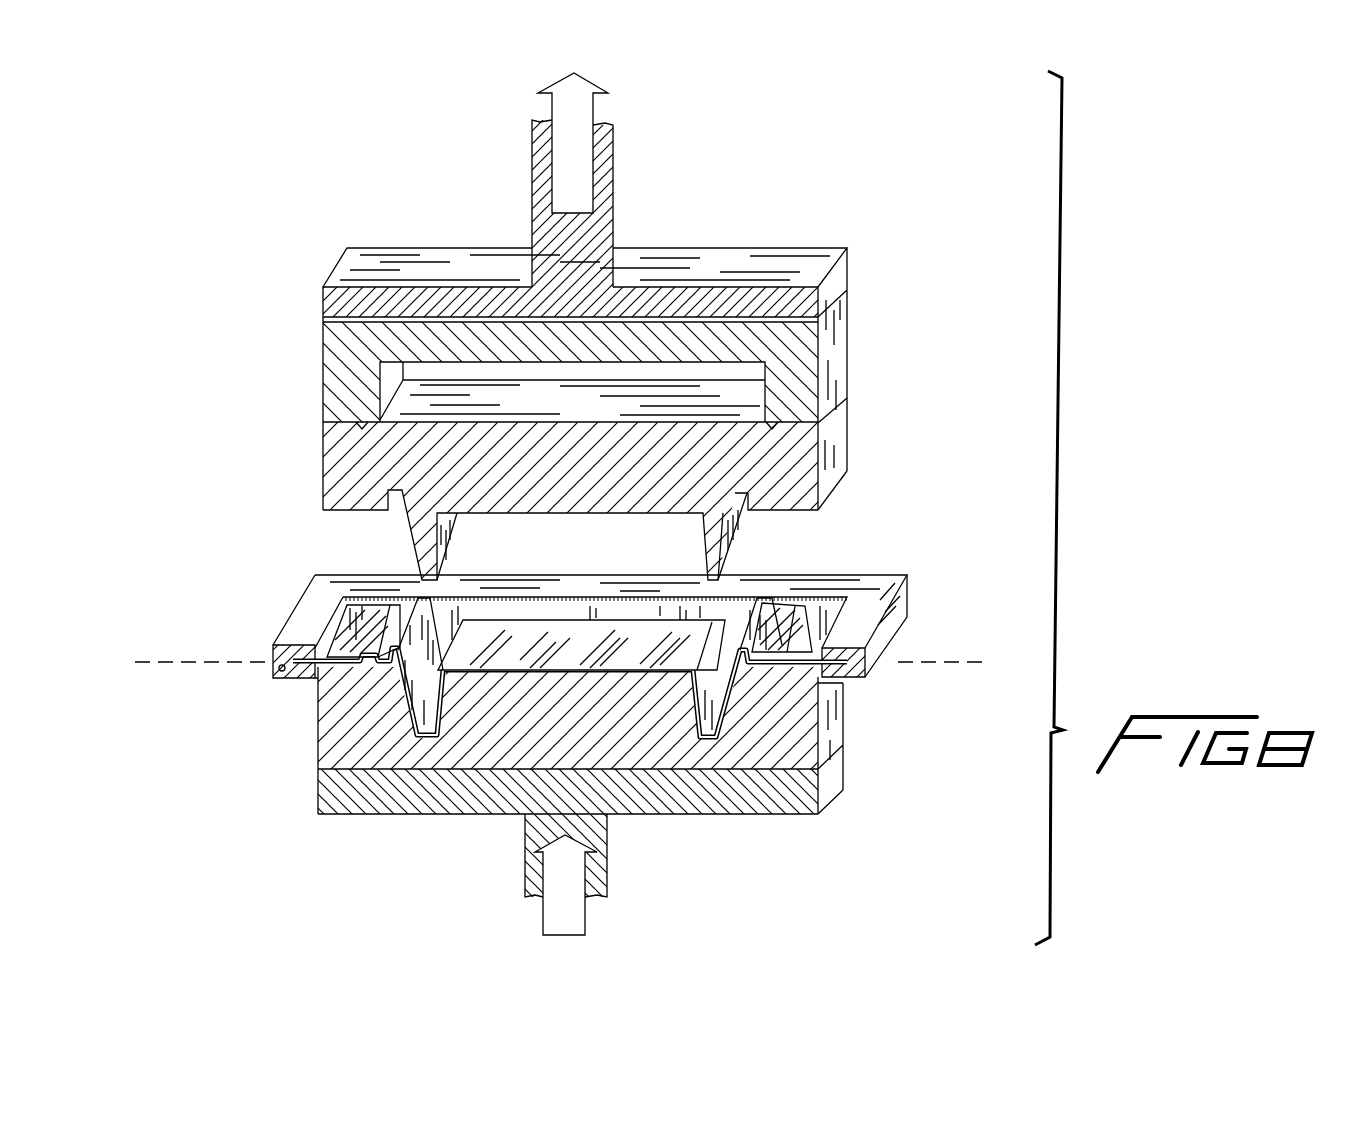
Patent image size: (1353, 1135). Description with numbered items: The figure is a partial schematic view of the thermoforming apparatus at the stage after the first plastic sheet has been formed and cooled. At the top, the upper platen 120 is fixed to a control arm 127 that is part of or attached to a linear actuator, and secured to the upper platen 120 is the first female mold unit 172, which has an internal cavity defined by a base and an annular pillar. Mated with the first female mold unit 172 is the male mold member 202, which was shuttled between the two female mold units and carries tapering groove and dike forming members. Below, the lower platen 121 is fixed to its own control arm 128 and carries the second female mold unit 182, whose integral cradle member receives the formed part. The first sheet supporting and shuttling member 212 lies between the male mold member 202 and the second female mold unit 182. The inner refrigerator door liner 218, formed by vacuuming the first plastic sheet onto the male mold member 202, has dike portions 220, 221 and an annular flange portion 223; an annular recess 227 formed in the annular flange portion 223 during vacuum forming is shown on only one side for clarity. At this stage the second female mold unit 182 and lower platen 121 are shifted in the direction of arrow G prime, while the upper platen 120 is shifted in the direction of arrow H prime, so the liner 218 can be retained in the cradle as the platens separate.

The upper platen 120 is at (790, 260).
The control arm 127 is at (602, 225).
The first female mold unit 172 is at (851, 331).
The male mold member 202 is at (849, 439).
The first sheet supporting and shuttling member 212 is at (871, 571).
The second female mold unit 182 is at (313, 721).
The inner refrigerator door liner 218 is at (602, 635).
The dike portion 220 is at (437, 715).
The dike portion 221 is at (693, 717).
The annular flange portion 223 is at (348, 637).
The annular recess 227 is at (767, 660).
The lower platen 121 is at (780, 803).
The control arm 128 is at (595, 873).